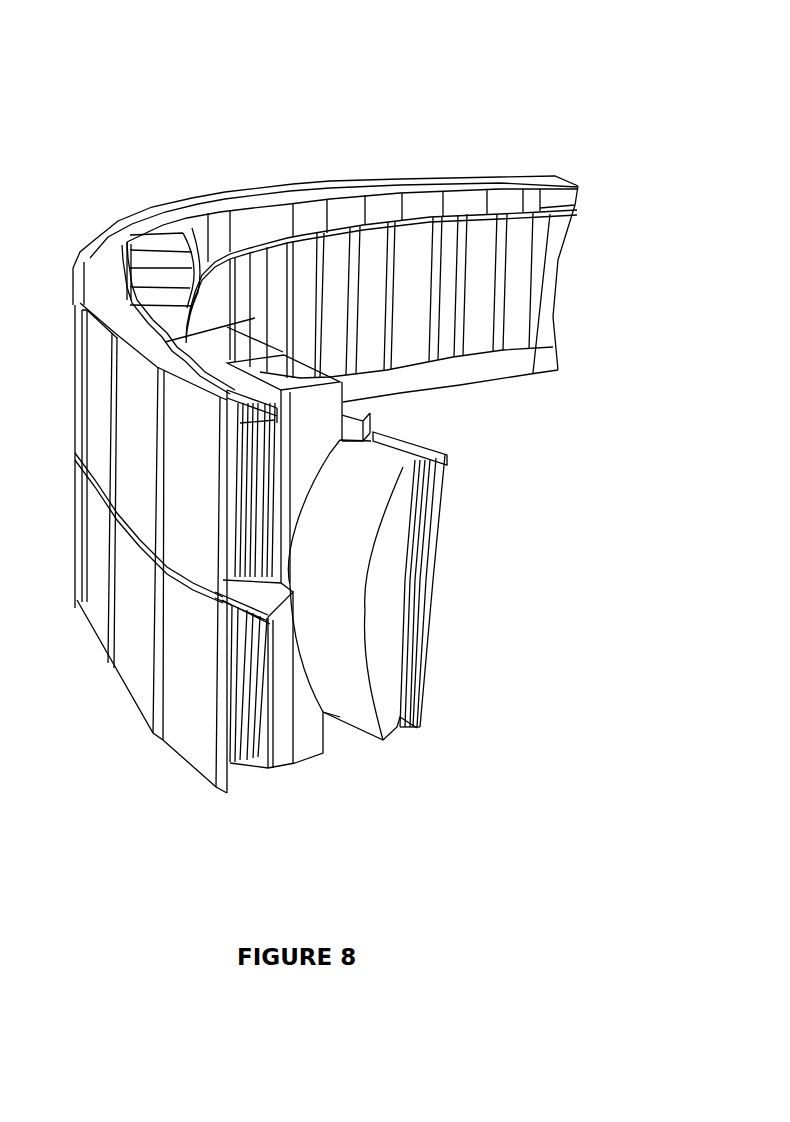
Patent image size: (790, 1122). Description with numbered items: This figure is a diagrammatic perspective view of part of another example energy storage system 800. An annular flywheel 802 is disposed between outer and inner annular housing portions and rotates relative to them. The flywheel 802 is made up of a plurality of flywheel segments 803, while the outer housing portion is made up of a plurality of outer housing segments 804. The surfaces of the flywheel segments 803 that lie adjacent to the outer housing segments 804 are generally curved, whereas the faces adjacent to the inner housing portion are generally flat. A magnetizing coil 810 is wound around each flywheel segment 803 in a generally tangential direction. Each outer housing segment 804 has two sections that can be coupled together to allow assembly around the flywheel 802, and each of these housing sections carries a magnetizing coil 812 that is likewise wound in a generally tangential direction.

The energy storage system 800 is at (630, 166).
The annular flywheel 802 is at (413, 714).
The flywheel segment 803 is at (428, 445).
The outer housing segment 804 is at (97, 610).
The magnetizing coil 810 is at (433, 535).
The magnetizing coil 812 is at (241, 756).